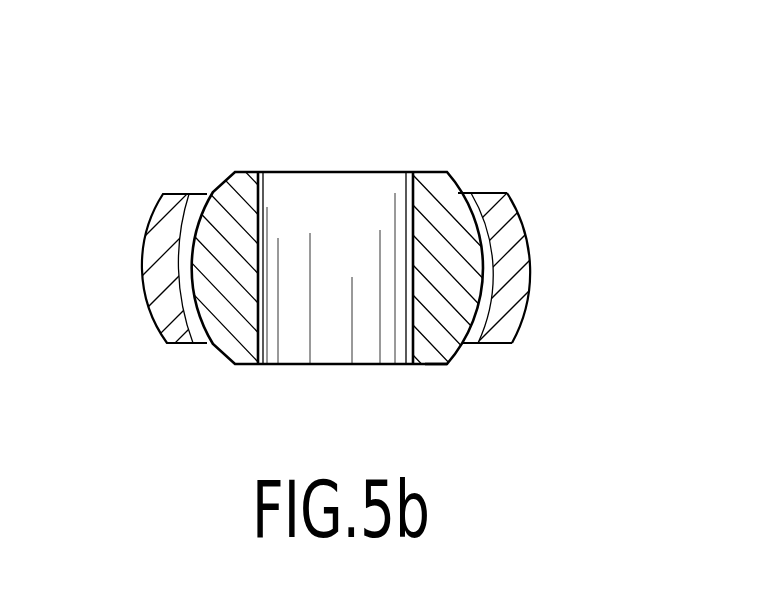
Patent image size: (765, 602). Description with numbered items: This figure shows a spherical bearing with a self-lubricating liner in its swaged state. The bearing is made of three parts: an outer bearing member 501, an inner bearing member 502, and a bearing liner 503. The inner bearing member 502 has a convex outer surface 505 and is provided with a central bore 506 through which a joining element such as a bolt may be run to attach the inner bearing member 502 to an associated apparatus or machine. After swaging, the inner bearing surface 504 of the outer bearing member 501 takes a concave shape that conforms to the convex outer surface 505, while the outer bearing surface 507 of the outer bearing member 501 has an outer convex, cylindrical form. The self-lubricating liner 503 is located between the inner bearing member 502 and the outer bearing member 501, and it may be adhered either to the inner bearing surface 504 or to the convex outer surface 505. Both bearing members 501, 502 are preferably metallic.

The outer bearing member 501 is at (525, 337).
The inner bearing member 502 is at (446, 177).
The bearing liner 503 is at (201, 172).
The inner bearing surface 504 is at (156, 341).
The convex outer surface 505 is at (462, 370).
The central bore 506 is at (347, 176).
The outer bearing surface 507 is at (534, 220).